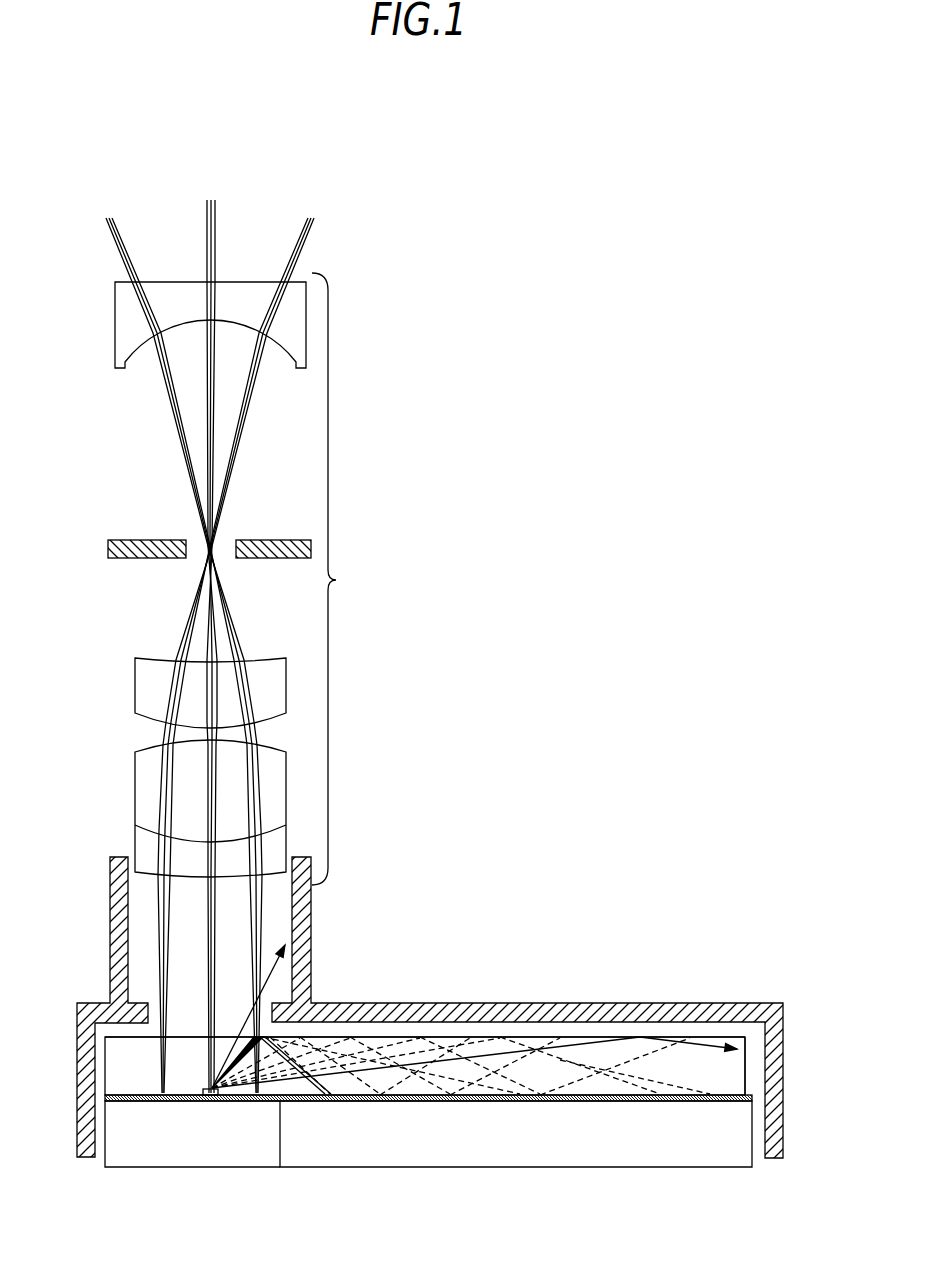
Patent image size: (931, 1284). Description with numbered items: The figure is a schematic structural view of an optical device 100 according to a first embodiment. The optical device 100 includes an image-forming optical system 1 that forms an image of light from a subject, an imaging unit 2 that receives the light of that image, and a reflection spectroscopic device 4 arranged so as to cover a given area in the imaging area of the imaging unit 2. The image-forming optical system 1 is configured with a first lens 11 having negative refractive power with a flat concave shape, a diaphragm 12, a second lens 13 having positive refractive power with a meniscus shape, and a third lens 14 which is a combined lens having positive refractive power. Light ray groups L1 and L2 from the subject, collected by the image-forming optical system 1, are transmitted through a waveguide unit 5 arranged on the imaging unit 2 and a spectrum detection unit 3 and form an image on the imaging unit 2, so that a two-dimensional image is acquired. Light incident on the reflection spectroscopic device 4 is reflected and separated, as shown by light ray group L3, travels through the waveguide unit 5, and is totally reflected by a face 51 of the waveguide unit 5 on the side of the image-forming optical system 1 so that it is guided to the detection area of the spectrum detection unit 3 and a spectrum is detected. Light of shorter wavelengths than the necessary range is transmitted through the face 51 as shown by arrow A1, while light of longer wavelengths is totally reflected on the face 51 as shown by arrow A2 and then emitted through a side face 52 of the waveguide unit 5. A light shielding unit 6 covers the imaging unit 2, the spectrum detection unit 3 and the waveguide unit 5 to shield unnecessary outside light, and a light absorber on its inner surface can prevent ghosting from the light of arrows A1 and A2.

The optical device 100 is at (552, 179).
The image-forming optical system 1 is at (335, 579).
The first lens 11 is at (120, 321).
The diaphragm 12 is at (108, 549).
The second lens 13 is at (135, 684).
The third lens 14 is at (135, 800).
The imaging unit 2 is at (185, 1167).
The spectrum detection unit 3 is at (455, 1167).
The reflection spectroscopic device 4 is at (208, 1100).
The waveguide unit 5 is at (105, 1052).
The face 51 is at (481, 1033).
The side face 52 is at (752, 1062).
The light shielding unit 6 is at (110, 933).
The arrow A1 is at (272, 982).
The arrow A2 is at (592, 1037).
The light ray group L1 is at (257, 639).
The light ray group L2 is at (170, 639).
The light ray group L3 is at (211, 623).